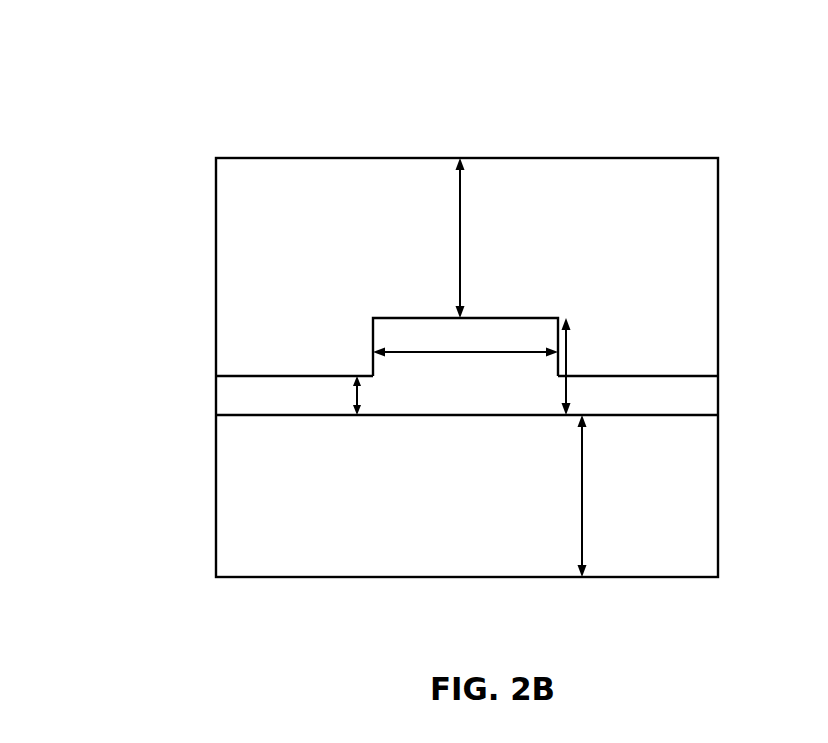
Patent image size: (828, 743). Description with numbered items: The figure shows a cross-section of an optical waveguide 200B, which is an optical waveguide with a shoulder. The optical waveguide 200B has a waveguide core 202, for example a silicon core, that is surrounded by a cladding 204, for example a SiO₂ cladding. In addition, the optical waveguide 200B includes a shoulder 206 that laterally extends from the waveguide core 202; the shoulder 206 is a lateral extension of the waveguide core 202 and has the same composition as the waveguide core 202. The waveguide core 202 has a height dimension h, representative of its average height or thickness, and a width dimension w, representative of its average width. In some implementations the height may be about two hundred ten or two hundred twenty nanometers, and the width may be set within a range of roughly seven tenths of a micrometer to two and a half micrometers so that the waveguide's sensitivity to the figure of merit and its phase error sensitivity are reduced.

The optical waveguide 200B is at (150, 28).
The waveguide core 202 is at (373, 318).
The cladding 204 is at (216, 274).
The shoulder 206 is at (304, 370).